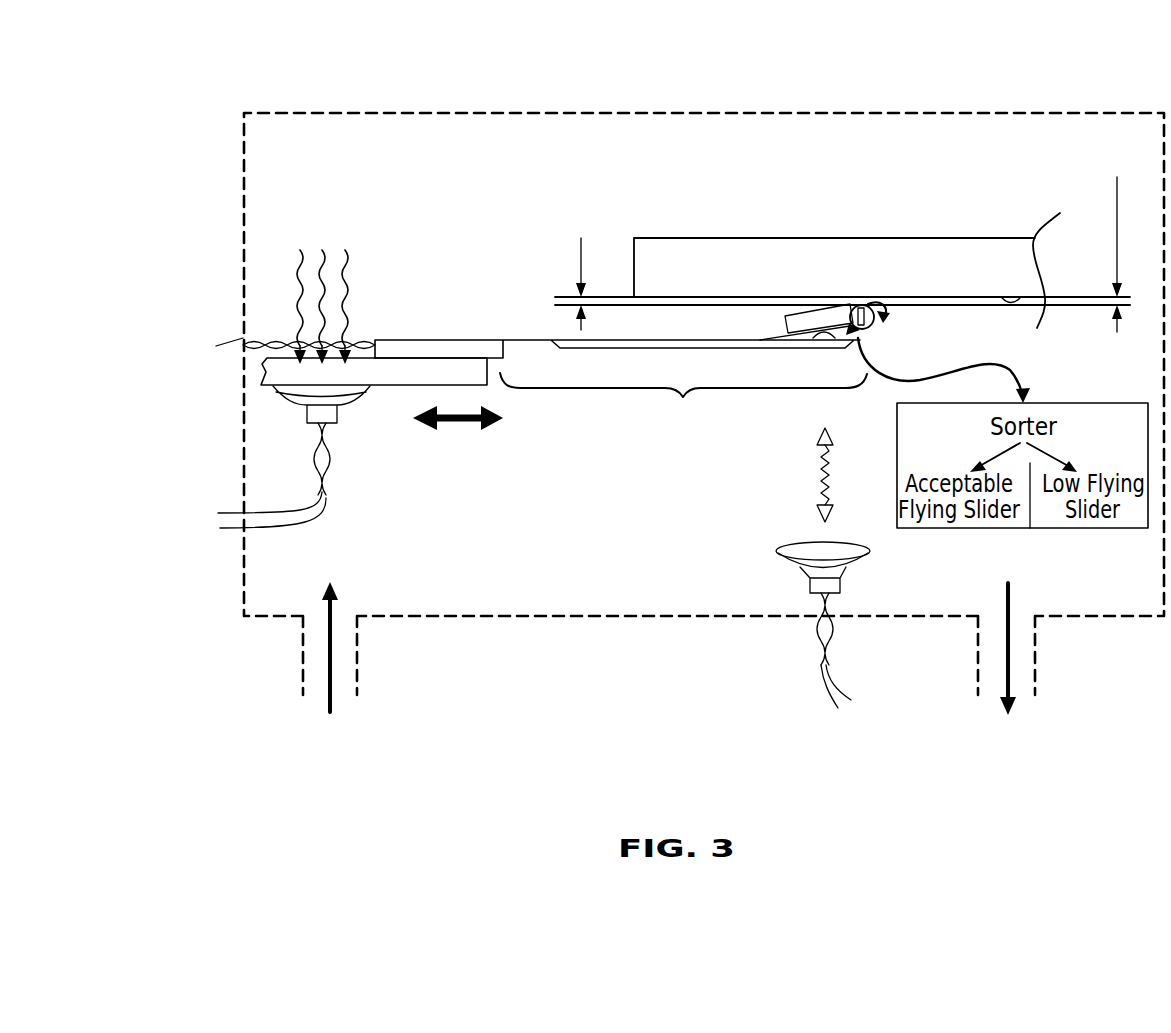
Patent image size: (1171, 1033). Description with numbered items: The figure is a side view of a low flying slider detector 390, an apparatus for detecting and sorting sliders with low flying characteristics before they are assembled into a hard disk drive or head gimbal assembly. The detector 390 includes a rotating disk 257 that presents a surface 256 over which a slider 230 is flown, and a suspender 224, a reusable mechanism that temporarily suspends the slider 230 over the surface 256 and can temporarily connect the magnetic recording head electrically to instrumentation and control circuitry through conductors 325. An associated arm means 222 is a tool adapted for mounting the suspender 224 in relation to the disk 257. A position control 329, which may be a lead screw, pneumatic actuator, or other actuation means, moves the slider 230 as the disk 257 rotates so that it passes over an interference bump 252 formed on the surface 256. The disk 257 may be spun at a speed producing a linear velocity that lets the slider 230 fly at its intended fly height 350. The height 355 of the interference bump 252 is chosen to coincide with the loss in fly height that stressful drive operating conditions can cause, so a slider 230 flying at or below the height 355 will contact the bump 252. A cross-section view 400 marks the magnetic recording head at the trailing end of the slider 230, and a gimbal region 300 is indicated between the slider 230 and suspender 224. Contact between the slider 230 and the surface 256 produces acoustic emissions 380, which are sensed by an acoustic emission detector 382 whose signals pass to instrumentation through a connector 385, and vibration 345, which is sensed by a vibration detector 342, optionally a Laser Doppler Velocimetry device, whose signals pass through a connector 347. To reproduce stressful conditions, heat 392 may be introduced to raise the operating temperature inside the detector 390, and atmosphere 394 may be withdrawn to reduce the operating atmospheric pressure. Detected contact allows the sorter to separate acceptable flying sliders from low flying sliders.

The low flying slider detector 390 is at (421, 106).
The disk 257 is at (807, 248).
The fly height 350 is at (588, 269).
The height of interference bump 355 is at (1119, 239).
The interference bump 252 is at (1023, 304).
The surface 256 is at (963, 298).
The slider 230 is at (785, 323).
The detail cross-section view 400 is at (877, 325).
The head gimbal 300 is at (885, 303).
The suspender 224 is at (683, 397).
The arm means 222 is at (393, 388).
The position control 329 is at (462, 424).
The acoustic emissions 380 is at (328, 280).
The conductors 325 is at (242, 348).
The acoustic emission detector 382 is at (292, 398).
The connector 385 is at (216, 525).
The vibration detector 342 is at (858, 557).
The connector 347 is at (825, 683).
The vibration 345 is at (818, 474).
The heat 392 is at (333, 692).
The atmosphere 394 is at (1013, 678).